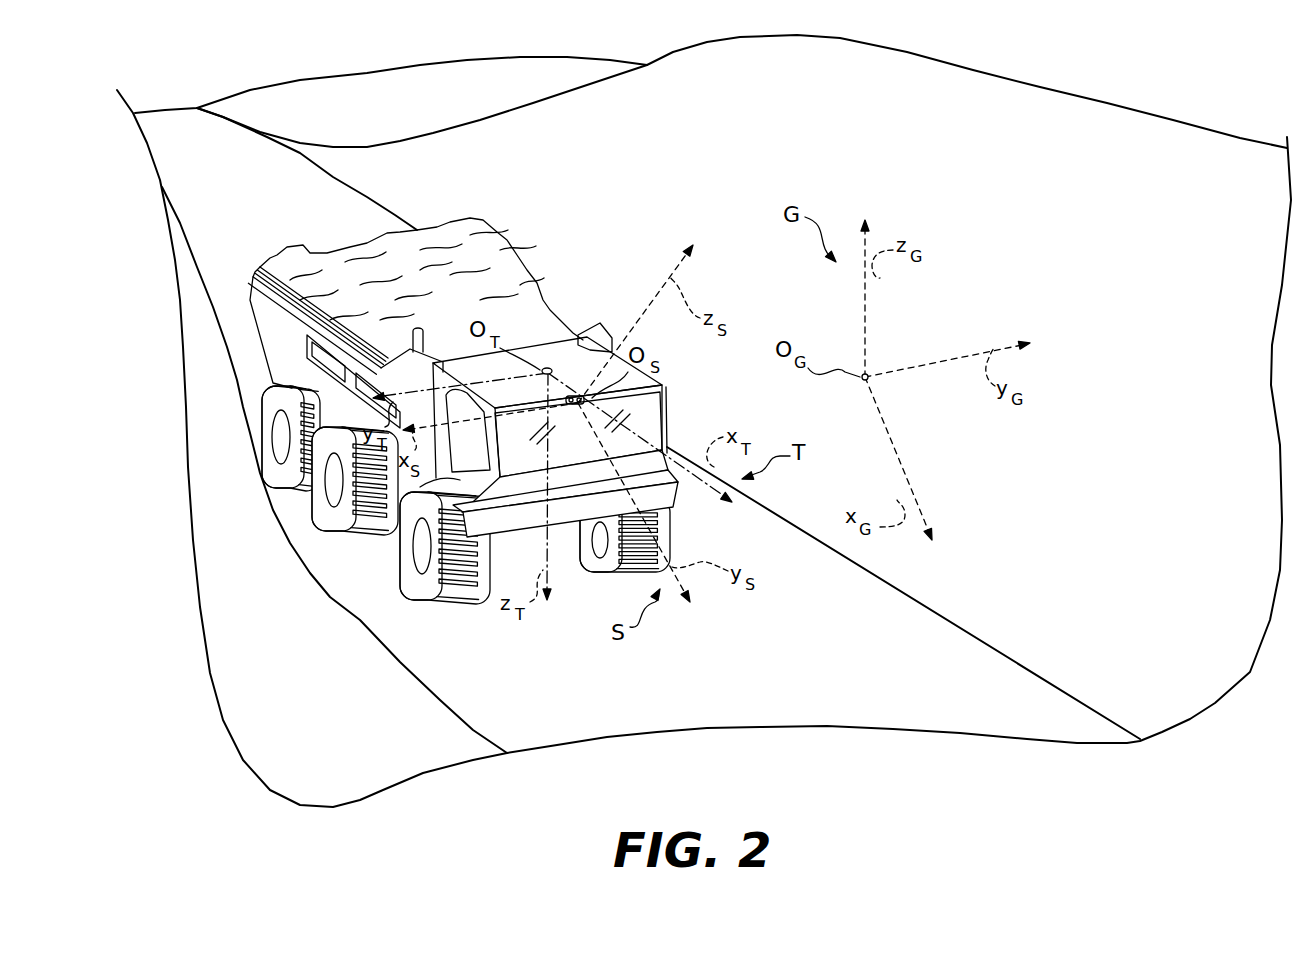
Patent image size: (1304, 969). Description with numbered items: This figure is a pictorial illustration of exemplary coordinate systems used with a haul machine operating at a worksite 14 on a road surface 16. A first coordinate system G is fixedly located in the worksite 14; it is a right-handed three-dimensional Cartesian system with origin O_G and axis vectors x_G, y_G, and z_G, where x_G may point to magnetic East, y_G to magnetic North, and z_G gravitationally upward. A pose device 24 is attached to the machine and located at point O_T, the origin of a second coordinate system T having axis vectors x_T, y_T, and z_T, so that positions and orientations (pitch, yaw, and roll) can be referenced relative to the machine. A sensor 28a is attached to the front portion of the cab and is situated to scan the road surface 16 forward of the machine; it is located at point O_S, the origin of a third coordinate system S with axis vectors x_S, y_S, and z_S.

The worksite 14 is at (1108, 100).
The road surface 16 is at (488, 713).
The pose device 24 is at (580, 390).
The sensor 28a is at (577, 405).